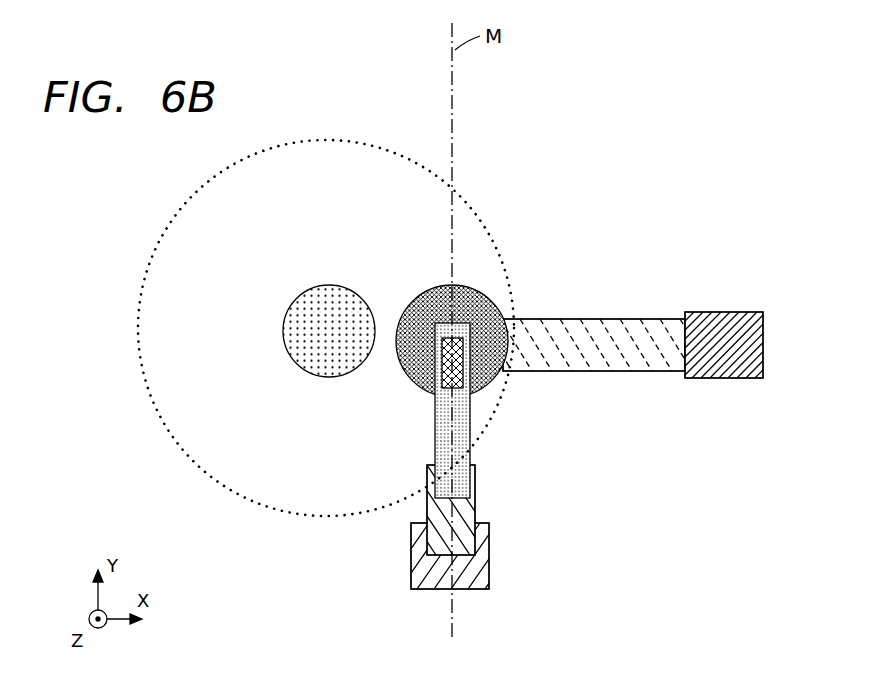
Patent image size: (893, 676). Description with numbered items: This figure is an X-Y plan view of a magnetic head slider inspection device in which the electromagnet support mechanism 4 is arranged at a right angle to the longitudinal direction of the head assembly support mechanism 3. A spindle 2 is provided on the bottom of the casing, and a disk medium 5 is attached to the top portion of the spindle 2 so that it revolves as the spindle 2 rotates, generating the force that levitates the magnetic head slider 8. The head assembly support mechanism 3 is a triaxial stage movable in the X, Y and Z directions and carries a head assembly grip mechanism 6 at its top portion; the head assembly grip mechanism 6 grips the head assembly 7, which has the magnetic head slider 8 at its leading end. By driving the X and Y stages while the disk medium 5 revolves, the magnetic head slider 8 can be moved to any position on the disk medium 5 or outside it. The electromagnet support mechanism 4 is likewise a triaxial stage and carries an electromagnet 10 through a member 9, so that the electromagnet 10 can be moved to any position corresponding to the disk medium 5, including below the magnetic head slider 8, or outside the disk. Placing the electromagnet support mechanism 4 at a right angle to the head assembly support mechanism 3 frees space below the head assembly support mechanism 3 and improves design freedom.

The spindle 2 is at (300, 333).
The head assembly support mechanism 3 is at (480, 570).
The electromagnet support mechanism 4 is at (722, 324).
The disk medium 5 is at (497, 242).
The head assembly grip mechanism 6 is at (463, 508).
The head assembly 7 is at (456, 437).
The magnetic head slider 8 is at (460, 374).
The member 9 is at (632, 326).
The electromagnet 10 is at (503, 300).